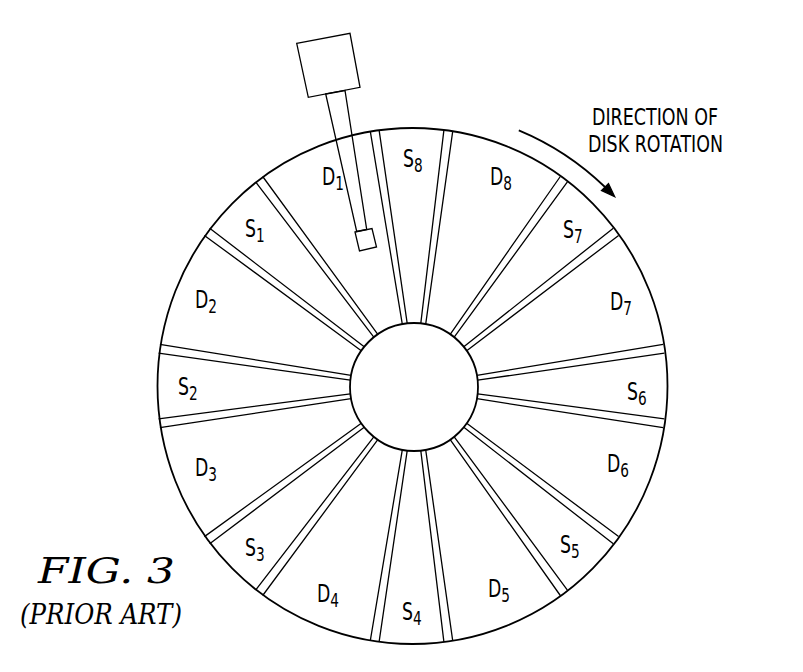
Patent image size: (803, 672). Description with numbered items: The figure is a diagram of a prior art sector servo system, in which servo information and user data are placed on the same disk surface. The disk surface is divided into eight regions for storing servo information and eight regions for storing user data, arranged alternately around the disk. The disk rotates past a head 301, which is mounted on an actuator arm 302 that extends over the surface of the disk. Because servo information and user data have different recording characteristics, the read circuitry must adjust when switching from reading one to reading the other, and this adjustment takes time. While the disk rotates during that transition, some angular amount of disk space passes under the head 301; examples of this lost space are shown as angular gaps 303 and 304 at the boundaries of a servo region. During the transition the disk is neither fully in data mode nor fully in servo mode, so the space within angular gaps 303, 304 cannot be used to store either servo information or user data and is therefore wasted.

The head 301 is at (367, 247).
The actuator arm 302 is at (318, 46).
The angular gap 303 is at (265, 180).
The angular gap 304 is at (213, 233).